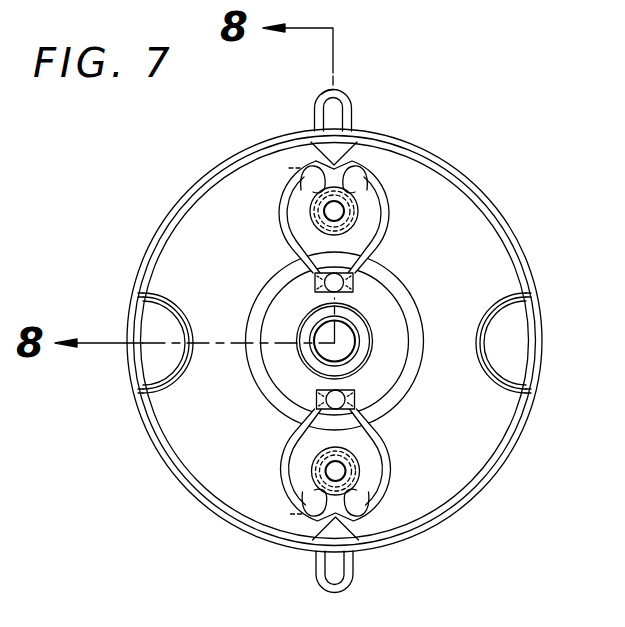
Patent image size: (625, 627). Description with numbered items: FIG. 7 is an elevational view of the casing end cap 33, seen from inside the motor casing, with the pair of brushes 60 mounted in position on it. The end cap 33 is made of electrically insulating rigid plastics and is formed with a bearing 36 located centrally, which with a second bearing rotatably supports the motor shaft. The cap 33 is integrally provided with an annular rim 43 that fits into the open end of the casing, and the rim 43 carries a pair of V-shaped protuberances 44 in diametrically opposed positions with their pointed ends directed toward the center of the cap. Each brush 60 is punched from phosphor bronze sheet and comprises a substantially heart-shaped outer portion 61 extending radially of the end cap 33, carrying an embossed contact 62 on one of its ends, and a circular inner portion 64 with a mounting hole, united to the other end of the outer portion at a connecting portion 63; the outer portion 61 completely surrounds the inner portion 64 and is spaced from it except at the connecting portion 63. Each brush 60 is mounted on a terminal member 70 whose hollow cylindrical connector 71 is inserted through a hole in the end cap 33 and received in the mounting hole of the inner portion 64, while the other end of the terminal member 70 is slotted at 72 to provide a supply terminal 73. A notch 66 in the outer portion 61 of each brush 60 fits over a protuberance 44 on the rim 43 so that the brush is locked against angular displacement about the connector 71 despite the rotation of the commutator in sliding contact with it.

The end cap 33 is at (517, 237).
The bearing 36 is at (362, 352).
The annular rim 43 is at (456, 190).
The V-shaped protuberance 44 is at (349, 139).
The brush 60 is at (282, 198).
The outer portion 61 is at (385, 194).
The embossed contact 62 is at (354, 286).
The connecting portion 63 is at (345, 173).
The inner portion 64 is at (349, 233).
The notch 66 is at (318, 150).
The terminal member 70 is at (335, 88).
The connector 71 is at (338, 211).
The slot 72 is at (338, 109).
The supply terminal 73 is at (322, 94).